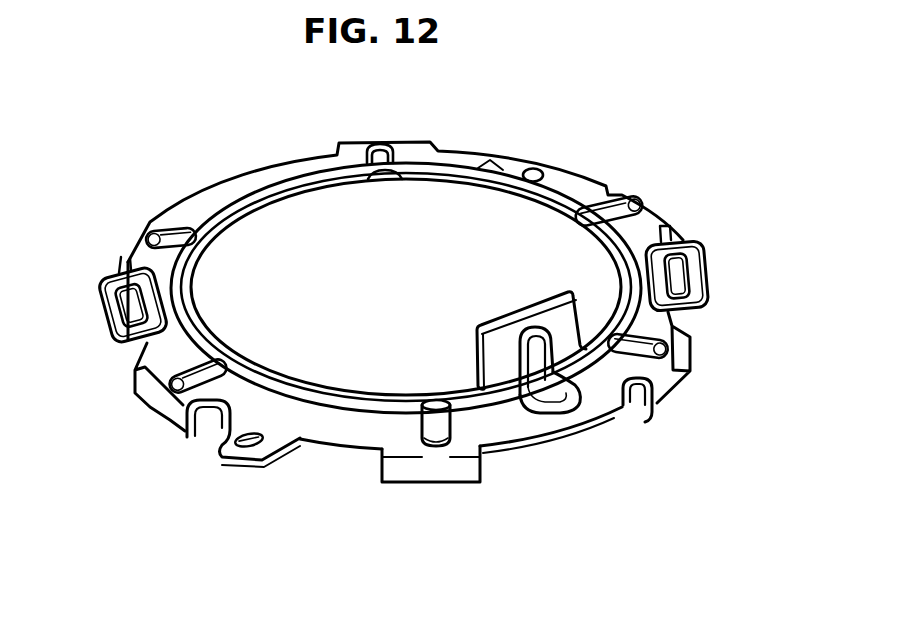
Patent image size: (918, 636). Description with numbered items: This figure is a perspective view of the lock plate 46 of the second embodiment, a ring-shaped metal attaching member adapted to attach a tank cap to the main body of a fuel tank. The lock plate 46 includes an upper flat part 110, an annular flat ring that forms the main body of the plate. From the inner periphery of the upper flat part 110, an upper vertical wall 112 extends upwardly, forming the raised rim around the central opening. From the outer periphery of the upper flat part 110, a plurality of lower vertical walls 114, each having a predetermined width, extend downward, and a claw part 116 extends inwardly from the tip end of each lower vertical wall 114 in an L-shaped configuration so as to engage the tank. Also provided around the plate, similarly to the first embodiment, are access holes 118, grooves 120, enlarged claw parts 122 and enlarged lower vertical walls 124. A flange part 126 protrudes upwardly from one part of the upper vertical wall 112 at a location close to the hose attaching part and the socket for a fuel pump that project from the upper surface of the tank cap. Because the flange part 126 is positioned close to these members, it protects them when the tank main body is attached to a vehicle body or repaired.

The lock plate 46 is at (397, 343).
The upper flat part 110 is at (343, 424).
The upper vertical wall 112 is at (513, 158).
The lower vertical walls 114 is at (670, 377).
The claw part 116 is at (203, 437).
The access holes 118 is at (125, 310).
The grooves 120 is at (158, 240).
The enlarged claw parts 122 is at (380, 484).
The enlarged lower vertical walls 124 is at (458, 468).
The flange part 126 is at (495, 358).